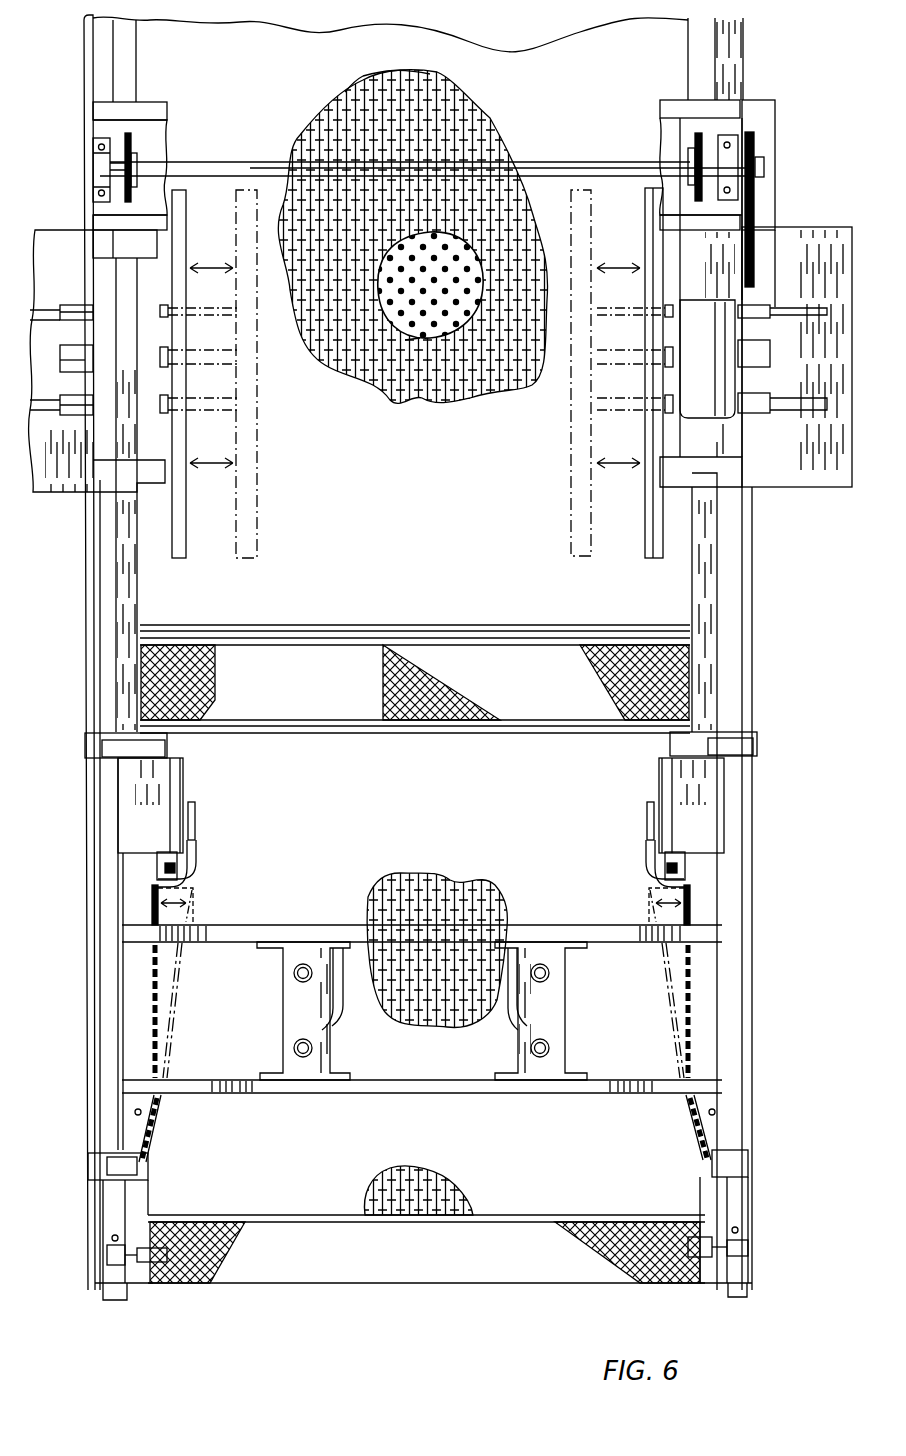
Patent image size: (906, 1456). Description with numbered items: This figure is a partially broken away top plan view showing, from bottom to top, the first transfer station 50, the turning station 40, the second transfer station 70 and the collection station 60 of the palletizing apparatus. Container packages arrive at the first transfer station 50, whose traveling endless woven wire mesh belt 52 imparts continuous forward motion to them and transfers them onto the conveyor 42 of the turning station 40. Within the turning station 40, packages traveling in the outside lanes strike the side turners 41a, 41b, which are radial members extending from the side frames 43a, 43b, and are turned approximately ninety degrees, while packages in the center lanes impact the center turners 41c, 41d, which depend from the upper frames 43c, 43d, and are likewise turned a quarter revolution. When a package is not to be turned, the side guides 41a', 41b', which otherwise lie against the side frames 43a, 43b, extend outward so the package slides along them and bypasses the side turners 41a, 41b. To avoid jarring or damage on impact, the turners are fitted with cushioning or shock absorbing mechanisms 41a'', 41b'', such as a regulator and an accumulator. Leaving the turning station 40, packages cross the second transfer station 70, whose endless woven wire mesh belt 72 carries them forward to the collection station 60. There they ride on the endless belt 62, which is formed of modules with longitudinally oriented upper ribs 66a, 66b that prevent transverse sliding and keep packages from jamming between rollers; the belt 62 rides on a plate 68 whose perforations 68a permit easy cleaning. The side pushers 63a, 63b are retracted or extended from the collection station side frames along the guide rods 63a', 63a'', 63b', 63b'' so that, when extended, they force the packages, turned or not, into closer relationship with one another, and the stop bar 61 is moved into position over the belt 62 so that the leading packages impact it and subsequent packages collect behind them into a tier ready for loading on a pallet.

The turning station 40 is at (95, 1035).
The side turner 41a is at (219, 844).
The side guide 41a' is at (106, 905).
The cushioning or shock absorbing mechanism 41a'' is at (99, 864).
The side turner 41b is at (616, 844).
The side guide 41b' is at (740, 897).
The cushioning or shock absorbing mechanism 41b'' is at (751, 852).
The center turner 41c is at (338, 1018).
The center turner 41d is at (512, 1015).
The conveyor 42 is at (425, 890).
The side frame 43a is at (140, 820).
The side frame 43b is at (705, 782).
The upper frame 43c is at (290, 960).
The upper frame 43d is at (550, 1000).
The first transfer station 50 is at (98, 1243).
The endless woven wire mesh belt 52 is at (425, 1282).
The collection station 60 is at (93, 508).
The stop bar 61 is at (222, 164).
The endless belt 62 is at (458, 108).
The side pusher 63a is at (214, 404).
The guide rod 63a' is at (136, 285).
The guide rod 63a'' is at (249, 397).
The side pusher 63b is at (624, 398).
The guide rod 63b' is at (595, 356).
The guide rod 63b'' is at (724, 357).
The longitudinally oriented upper rib 66a is at (352, 90).
The longitudinally oriented upper rib 66b is at (376, 73).
The plate 68 is at (440, 330).
The perforation 68a is at (400, 340).
The second transfer station 70 is at (93, 637).
The endless woven wire mesh belt 72 is at (355, 655).